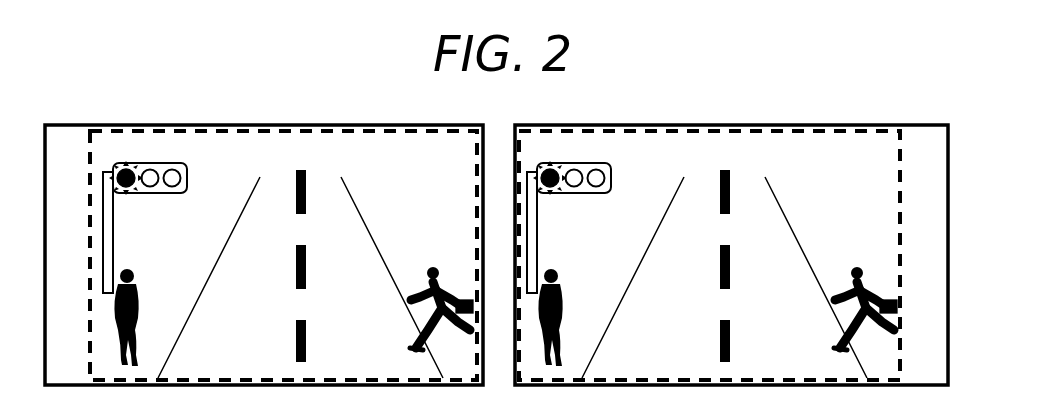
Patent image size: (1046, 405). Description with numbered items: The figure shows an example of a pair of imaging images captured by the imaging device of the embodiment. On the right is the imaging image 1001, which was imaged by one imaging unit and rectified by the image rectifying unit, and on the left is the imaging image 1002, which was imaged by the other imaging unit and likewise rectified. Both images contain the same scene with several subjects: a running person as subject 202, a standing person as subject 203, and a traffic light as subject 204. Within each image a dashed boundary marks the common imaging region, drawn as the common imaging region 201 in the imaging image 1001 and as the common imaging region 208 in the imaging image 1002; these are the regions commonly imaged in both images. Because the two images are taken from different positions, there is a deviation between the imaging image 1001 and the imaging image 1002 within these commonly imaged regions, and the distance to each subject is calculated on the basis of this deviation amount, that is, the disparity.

The imaging image 1001 is at (740, 239).
The imaging image 1002 is at (264, 239).
The common imaging region 201 is at (735, 255).
The subject 202 is at (637, 310).
The subject 203 is at (360, 315).
The subject 204 is at (357, 214).
The common imaging region 208 is at (71, 255).